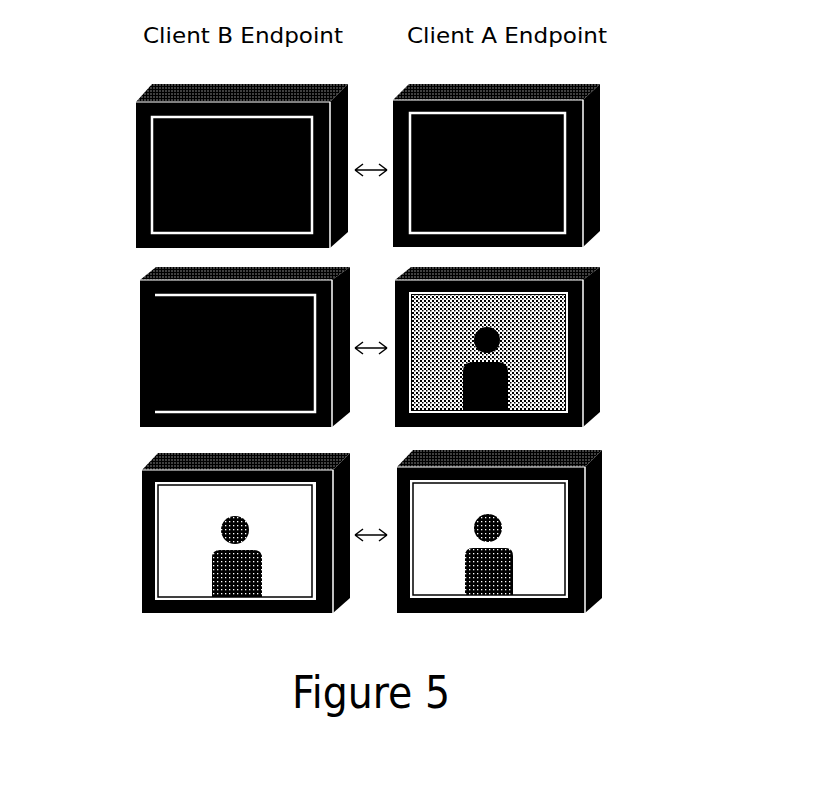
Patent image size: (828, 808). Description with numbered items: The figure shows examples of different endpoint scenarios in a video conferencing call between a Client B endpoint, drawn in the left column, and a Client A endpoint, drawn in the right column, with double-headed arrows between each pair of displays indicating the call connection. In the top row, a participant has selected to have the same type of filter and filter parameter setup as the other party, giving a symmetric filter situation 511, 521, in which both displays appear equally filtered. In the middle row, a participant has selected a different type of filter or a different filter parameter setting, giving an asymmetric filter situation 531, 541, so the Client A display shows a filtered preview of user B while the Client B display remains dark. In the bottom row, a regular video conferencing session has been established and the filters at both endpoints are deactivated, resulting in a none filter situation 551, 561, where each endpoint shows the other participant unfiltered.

The symmetric filter situation 511 is at (600, 201).
The symmetric filter situation 521 is at (136, 198).
The asymmetric filter situation 531 is at (600, 361).
The asymmetric filter situation 541 is at (140, 379).
The none filter situation 551 is at (603, 544).
The none filter situation 561 is at (142, 551).